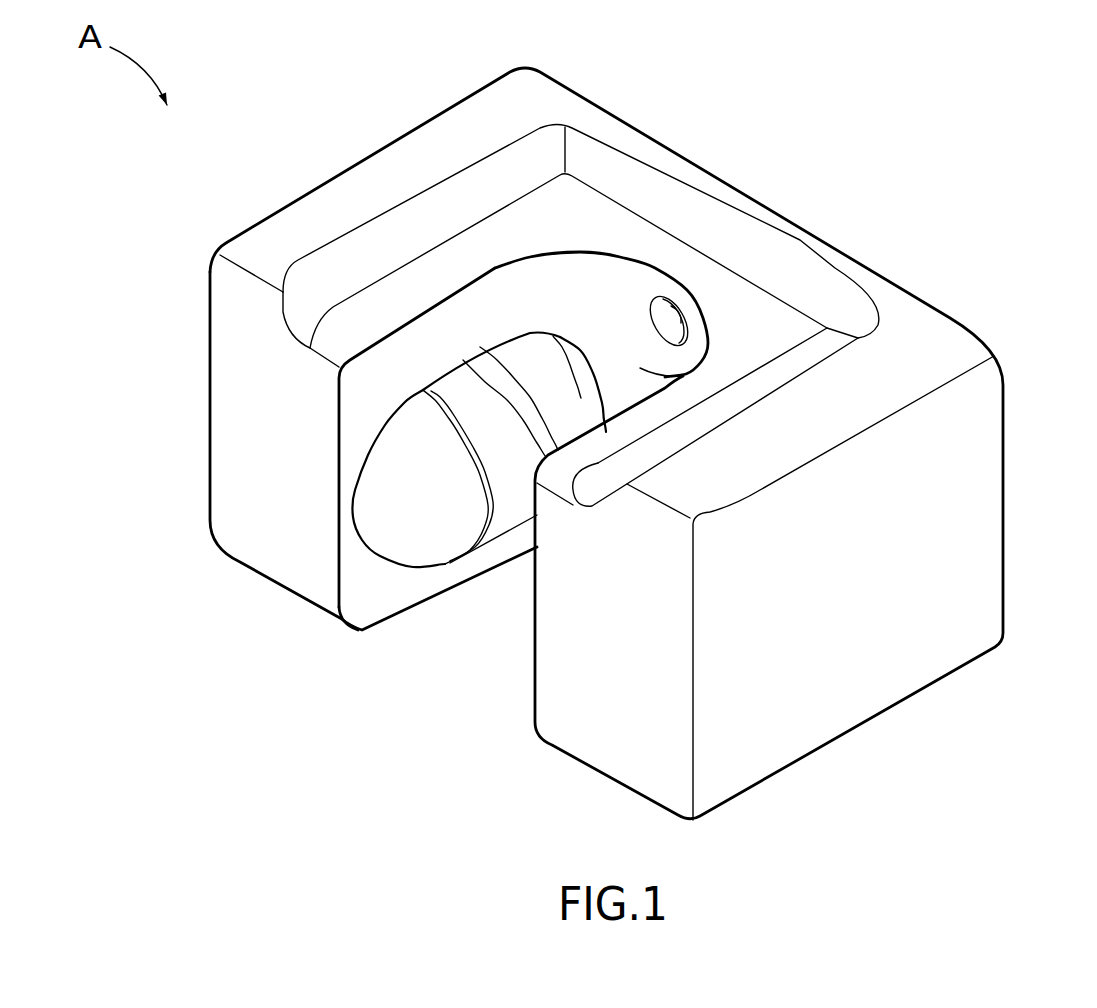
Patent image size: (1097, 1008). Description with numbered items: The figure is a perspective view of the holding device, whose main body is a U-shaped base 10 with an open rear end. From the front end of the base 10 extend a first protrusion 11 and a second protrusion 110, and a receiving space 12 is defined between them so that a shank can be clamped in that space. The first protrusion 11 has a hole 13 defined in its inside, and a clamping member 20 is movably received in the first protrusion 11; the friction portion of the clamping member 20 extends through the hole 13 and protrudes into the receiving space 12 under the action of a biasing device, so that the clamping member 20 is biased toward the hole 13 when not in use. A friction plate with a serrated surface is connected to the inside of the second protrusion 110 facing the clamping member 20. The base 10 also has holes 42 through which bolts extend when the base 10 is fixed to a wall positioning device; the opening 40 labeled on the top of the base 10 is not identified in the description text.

The base 10 is at (609, 182).
The first protrusion 11 is at (343, 197).
The receiving space 12 is at (697, 370).
The hole 13 is at (544, 346).
The second protrusion 110 is at (882, 378).
The clamping member 20 is at (413, 568).
The hole 40 is at (671, 297).
The holes 42 is at (683, 320).